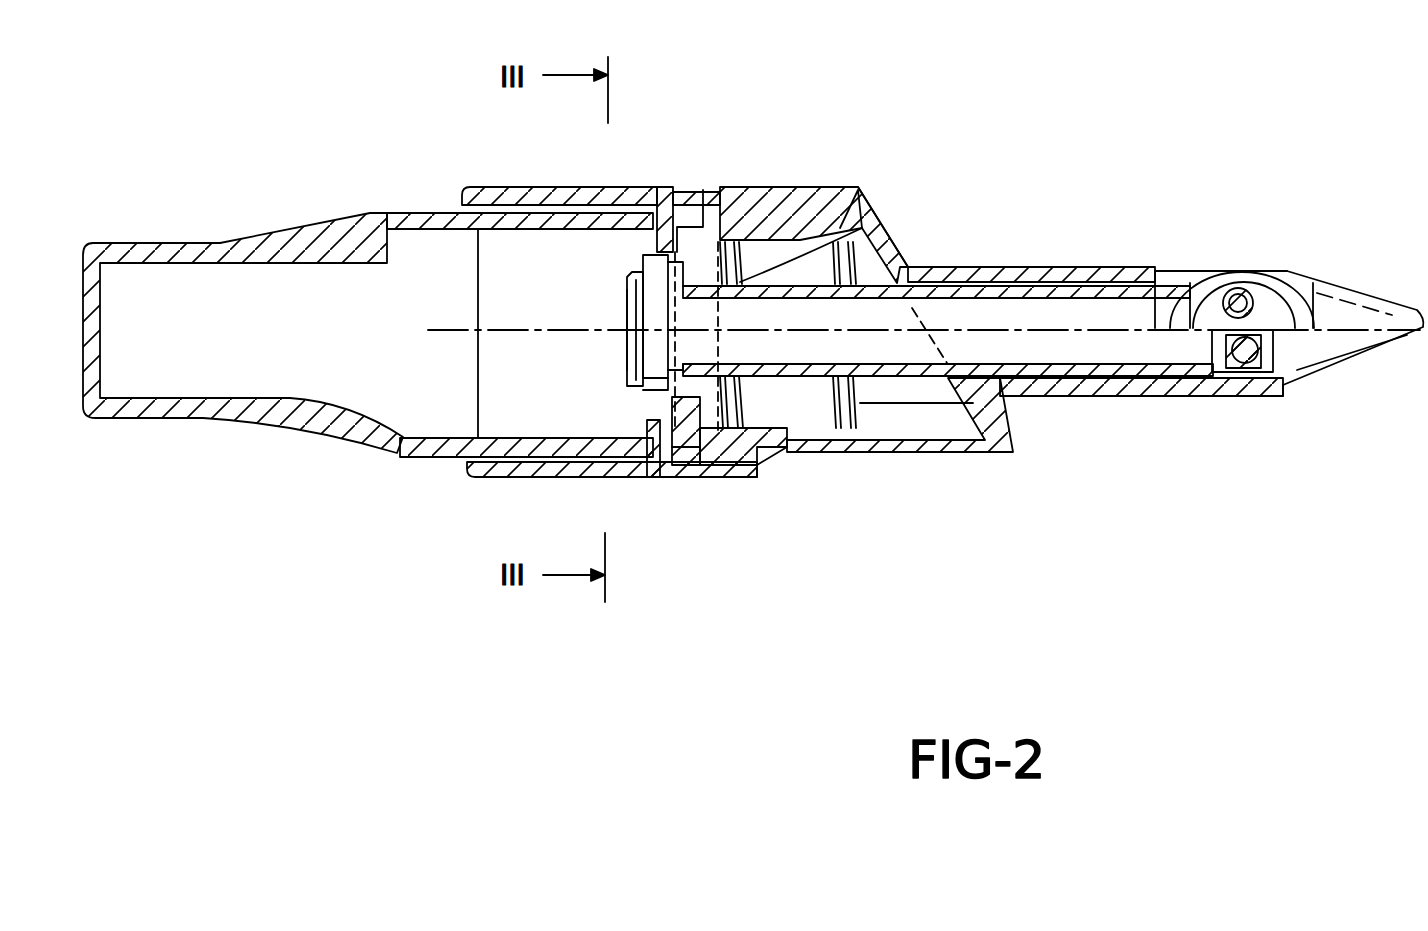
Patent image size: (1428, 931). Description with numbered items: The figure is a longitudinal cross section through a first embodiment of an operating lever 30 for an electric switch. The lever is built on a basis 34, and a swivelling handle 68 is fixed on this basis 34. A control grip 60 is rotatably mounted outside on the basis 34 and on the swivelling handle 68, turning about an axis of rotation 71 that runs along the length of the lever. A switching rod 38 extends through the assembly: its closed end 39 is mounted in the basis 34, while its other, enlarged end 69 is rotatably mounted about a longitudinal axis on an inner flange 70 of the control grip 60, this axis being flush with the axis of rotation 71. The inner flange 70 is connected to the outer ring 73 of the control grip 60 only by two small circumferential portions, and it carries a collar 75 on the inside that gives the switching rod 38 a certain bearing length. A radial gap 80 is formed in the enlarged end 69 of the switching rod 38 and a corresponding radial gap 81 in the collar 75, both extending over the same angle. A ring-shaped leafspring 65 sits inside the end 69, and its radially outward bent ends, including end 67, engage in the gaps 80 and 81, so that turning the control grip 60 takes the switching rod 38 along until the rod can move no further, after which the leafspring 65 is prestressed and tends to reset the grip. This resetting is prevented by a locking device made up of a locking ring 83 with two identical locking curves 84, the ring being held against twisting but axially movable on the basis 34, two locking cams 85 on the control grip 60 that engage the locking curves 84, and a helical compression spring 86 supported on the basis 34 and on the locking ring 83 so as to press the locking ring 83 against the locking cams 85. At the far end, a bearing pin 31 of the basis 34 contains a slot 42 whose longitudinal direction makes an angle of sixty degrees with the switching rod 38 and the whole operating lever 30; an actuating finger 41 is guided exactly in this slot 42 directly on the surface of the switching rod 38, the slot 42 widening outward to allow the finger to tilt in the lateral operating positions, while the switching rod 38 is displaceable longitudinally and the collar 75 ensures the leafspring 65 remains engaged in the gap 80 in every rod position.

The operating lever 30 is at (940, 243).
The bearing pin 31 is at (1265, 300).
The basis 34 is at (1040, 272).
The switching rod 38 is at (1060, 370).
The closed end 39 is at (1225, 365).
The actuating finger 41 is at (1278, 322).
The slot 42 is at (1227, 293).
The control grip 60 is at (608, 489).
The ring-shaped leafspring 65 is at (648, 352).
The end of the leafspring 67 is at (658, 252).
The swivelling handle 68 is at (293, 418).
The end of the switching rod 69 is at (627, 385).
The inner flange 70 is at (692, 227).
The axis of rotation 71 is at (437, 330).
The outer ring 73 is at (630, 478).
The collar 75 is at (648, 470).
The radial gap 80 is at (668, 250).
The radial gap 81 is at (655, 268).
The locking ring 83 is at (778, 455).
The locking curves 84 is at (725, 240).
The locking cams 85 is at (705, 240).
The helical compression spring 86 is at (857, 190).